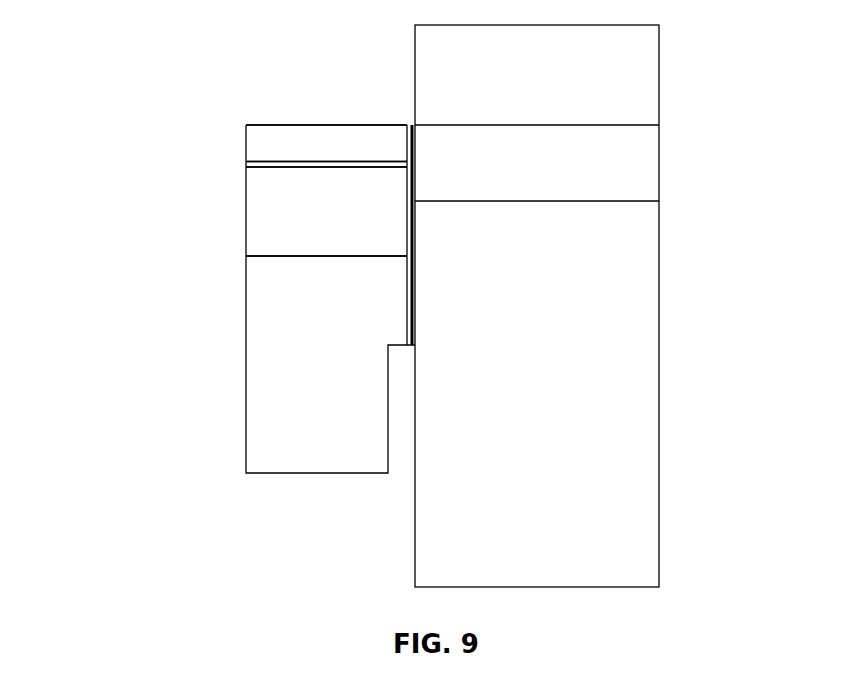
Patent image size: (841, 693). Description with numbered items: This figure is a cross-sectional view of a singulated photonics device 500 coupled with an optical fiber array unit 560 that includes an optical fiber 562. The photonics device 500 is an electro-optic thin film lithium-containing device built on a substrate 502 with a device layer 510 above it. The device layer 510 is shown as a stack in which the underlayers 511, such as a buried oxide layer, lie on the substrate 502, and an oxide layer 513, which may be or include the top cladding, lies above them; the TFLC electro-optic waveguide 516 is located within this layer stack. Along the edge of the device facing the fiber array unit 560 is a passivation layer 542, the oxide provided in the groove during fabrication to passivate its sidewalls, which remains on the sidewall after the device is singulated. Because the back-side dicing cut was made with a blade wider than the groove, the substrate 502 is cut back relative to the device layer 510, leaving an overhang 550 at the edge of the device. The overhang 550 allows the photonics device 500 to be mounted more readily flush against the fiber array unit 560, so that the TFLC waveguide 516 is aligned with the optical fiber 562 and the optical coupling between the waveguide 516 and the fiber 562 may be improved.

The photonics device 500 is at (96, 156).
The substrate 502 is at (330, 299).
The device layer 510 is at (210, 258).
The underlayers 511 is at (326, 211).
The oxide layer 513 is at (326, 143).
The TFLC electro-optic waveguide 516 is at (327, 160).
The passivation layer 542 is at (410, 124).
The overhang 550 is at (405, 385).
The optical fiber array unit 560 is at (726, 124).
The optical fiber 562 is at (537, 163).